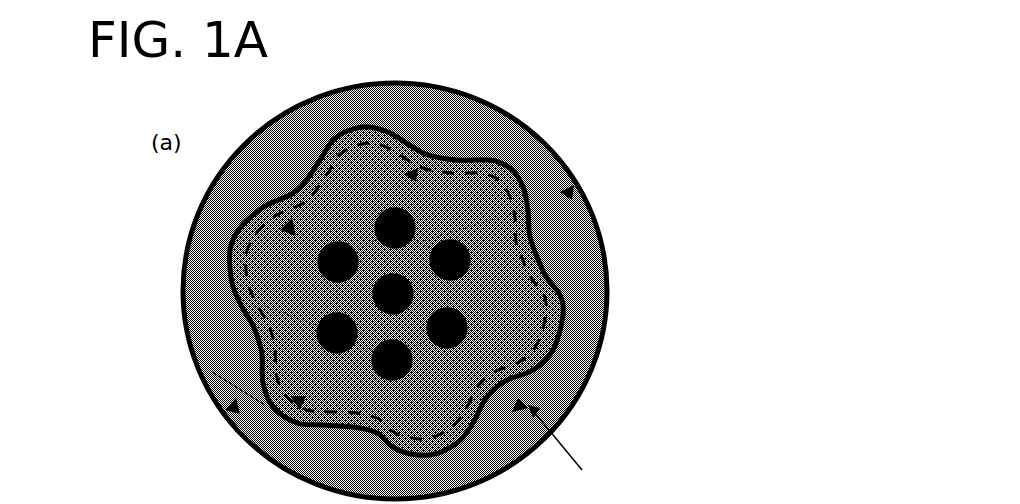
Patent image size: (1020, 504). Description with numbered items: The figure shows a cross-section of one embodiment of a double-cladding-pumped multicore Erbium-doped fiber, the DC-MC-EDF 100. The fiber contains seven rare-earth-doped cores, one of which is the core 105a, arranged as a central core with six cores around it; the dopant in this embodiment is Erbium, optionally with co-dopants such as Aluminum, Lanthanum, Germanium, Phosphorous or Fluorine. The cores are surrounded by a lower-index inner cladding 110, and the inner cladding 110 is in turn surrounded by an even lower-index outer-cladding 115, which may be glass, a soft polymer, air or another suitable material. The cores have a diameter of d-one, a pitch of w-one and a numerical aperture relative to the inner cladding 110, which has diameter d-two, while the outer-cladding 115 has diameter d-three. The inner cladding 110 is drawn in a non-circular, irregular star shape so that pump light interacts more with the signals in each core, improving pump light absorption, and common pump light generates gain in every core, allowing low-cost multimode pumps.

The DC-MC-EDF 100 is at (652, 38).
The outer-cladding 115 is at (408, 112).
The inner cladding 110 is at (280, 275).
The rare-earth-doped core 105a is at (397, 228).